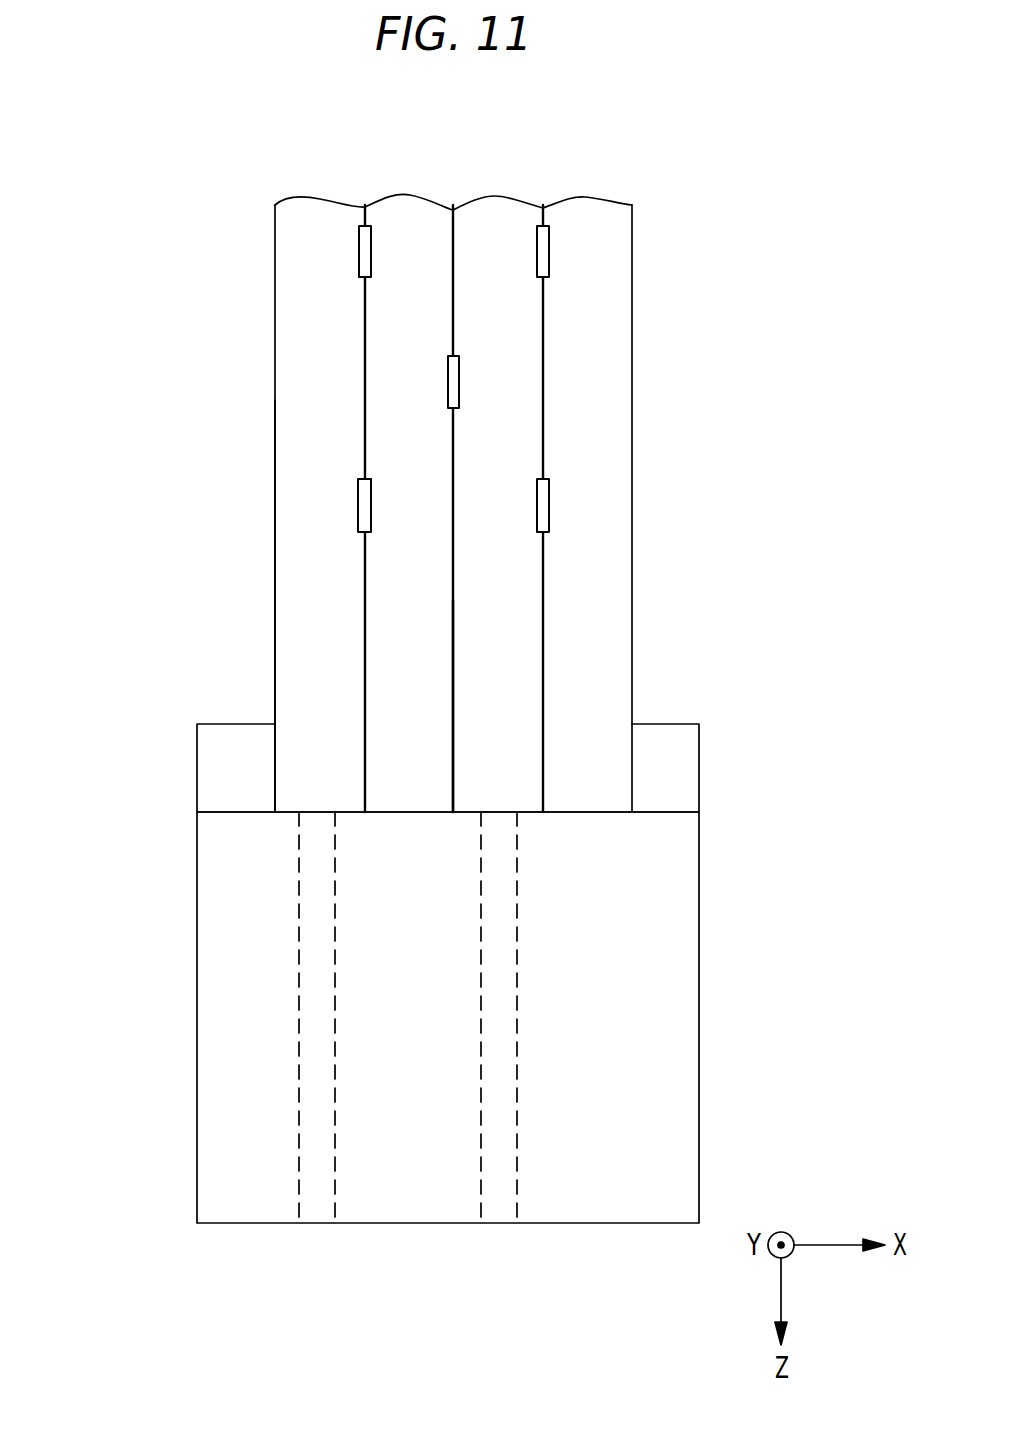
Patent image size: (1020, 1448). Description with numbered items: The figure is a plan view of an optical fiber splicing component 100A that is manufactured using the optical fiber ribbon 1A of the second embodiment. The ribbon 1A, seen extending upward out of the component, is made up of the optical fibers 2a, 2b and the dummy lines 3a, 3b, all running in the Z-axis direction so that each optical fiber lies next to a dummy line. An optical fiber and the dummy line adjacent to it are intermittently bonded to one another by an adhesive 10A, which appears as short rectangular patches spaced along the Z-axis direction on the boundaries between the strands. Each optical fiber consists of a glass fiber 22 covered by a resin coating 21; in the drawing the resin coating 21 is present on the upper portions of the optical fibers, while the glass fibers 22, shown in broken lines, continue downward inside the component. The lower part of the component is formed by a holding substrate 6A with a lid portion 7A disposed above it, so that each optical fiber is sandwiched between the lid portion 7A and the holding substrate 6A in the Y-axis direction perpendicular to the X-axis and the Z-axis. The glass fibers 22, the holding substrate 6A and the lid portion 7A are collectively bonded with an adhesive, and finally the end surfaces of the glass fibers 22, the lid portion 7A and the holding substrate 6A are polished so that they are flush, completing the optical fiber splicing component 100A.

The optical fiber ribbon 1A is at (197, 262).
The optical fiber splicing component 100A is at (158, 700).
The optical fiber 2a is at (300, 205).
The optical fiber 2b is at (513, 215).
The dummy line 3a is at (405, 212).
The dummy line 3b is at (597, 205).
The adhesive 10A is at (448, 368).
The resin coating 21 is at (283, 605).
The glass fiber 22 is at (299, 1198).
The holding substrate 6A is at (687, 768).
The lid portion 7A is at (687, 928).